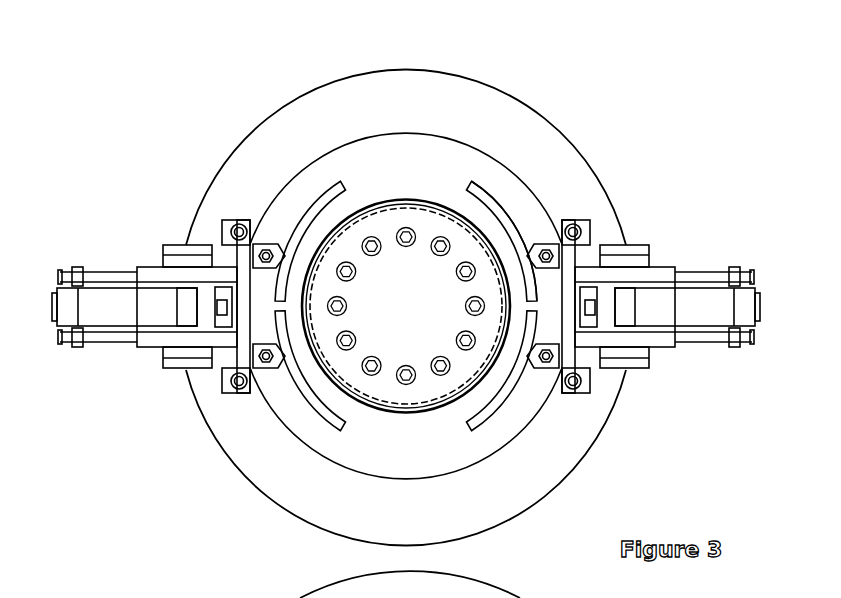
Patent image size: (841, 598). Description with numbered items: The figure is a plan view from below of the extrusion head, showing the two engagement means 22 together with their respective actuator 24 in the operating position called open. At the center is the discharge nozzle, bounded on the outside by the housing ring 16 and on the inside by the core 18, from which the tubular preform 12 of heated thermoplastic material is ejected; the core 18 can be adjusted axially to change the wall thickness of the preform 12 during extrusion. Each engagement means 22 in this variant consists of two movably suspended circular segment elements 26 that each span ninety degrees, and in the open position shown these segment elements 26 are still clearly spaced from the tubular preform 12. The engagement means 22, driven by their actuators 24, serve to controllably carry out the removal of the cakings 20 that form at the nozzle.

The tubular preform 12 is at (388, 200).
The housing ring 16 is at (360, 435).
The core 18 is at (417, 350).
The cakings 20 is at (433, 200).
The engagement means 22 is at (535, 209).
The actuator 24 is at (142, 310).
The circular segment element 26 is at (293, 218).